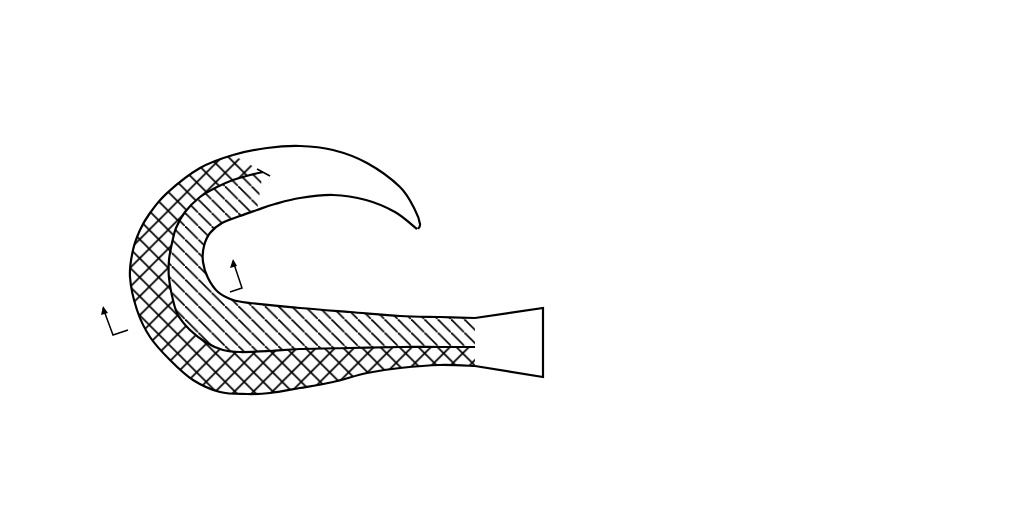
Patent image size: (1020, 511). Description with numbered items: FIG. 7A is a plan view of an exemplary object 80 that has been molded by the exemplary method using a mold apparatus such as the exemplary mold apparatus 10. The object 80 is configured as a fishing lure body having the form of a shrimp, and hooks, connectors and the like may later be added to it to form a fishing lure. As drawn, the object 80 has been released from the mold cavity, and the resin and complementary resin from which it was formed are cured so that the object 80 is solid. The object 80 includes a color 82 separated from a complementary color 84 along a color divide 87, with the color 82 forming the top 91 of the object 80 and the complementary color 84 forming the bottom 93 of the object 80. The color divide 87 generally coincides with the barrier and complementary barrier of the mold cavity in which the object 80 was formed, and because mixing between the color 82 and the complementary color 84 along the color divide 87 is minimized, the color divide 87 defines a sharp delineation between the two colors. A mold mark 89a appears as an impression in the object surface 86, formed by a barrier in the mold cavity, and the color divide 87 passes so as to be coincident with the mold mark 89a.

The mold apparatus 10 is at (595, 152).
The object 80 is at (363, 326).
The color 82 is at (250, 307).
The complementary color 84 is at (135, 246).
The object surface 86 is at (325, 168).
The color divide 87 is at (175, 212).
The mold mark 89a is at (250, 352).
The top 91 is at (268, 202).
The bottom 93 is at (180, 377).